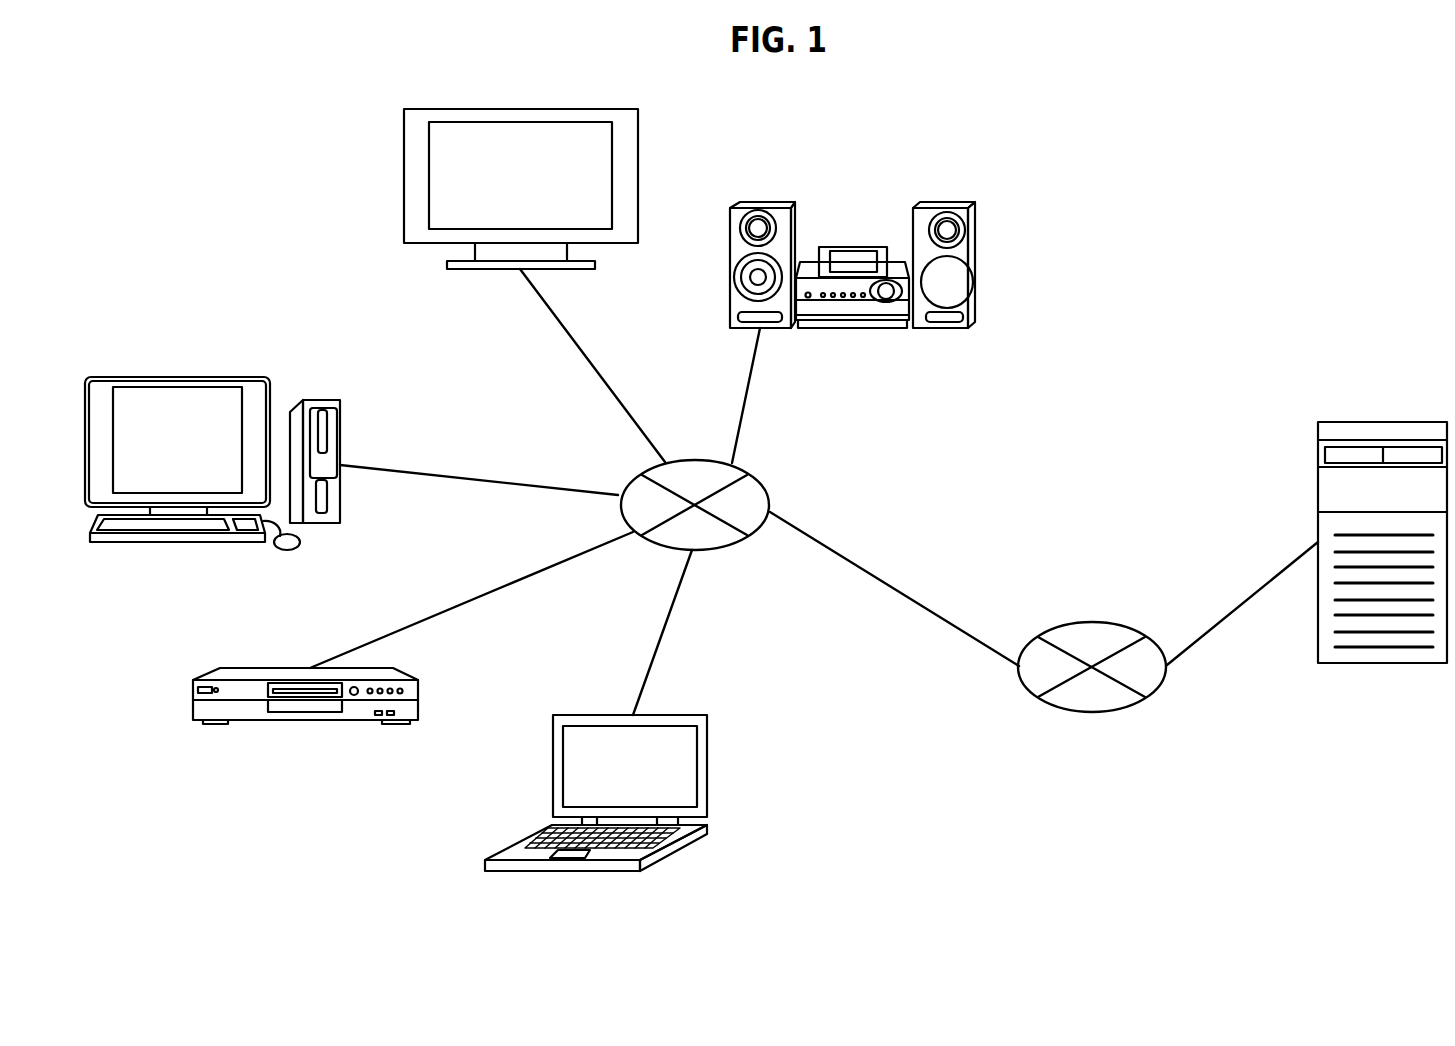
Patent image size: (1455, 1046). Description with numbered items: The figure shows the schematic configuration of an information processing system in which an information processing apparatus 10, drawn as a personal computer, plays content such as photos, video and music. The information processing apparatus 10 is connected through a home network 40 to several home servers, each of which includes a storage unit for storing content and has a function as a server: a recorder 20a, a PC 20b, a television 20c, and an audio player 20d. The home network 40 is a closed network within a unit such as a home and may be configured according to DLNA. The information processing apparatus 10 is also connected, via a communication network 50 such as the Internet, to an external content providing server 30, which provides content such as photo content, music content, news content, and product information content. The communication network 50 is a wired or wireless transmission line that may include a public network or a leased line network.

The information processing apparatus 10 is at (707, 762).
The recorder 20a is at (250, 668).
The PC 20b is at (178, 377).
The television 20c is at (522, 108).
The audio player 20d is at (938, 202).
The content providing server 30 is at (1382, 422).
The home network 40 is at (692, 458).
The communication network 50 is at (1083, 620).